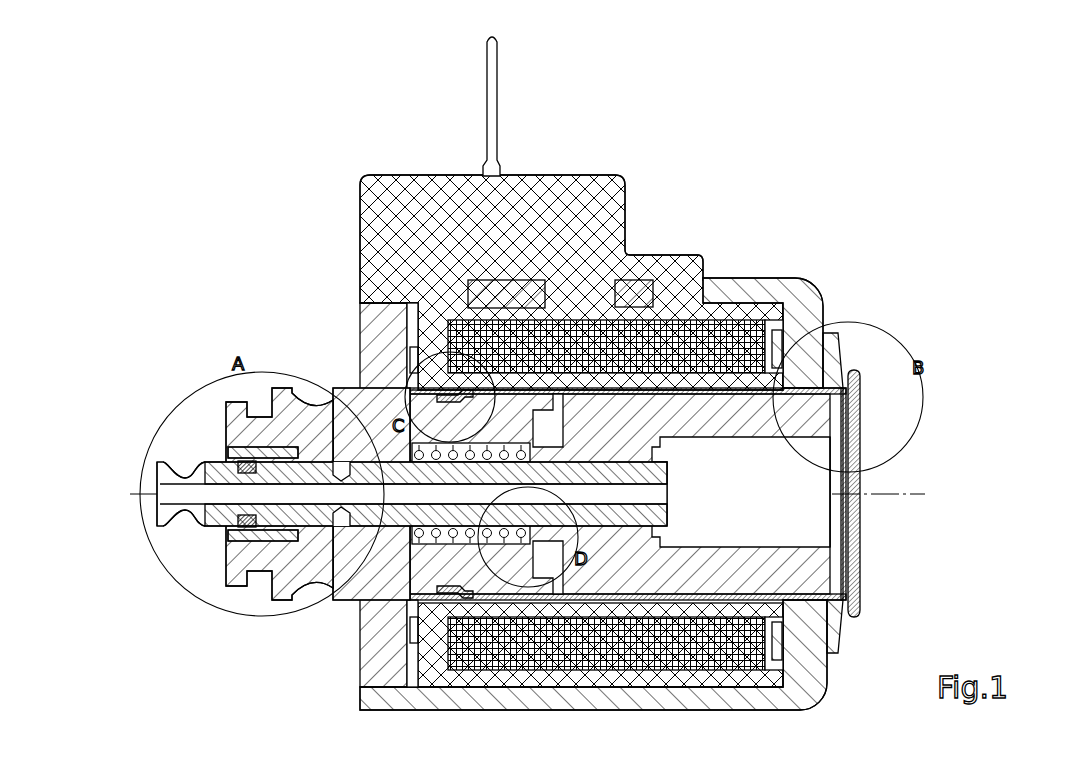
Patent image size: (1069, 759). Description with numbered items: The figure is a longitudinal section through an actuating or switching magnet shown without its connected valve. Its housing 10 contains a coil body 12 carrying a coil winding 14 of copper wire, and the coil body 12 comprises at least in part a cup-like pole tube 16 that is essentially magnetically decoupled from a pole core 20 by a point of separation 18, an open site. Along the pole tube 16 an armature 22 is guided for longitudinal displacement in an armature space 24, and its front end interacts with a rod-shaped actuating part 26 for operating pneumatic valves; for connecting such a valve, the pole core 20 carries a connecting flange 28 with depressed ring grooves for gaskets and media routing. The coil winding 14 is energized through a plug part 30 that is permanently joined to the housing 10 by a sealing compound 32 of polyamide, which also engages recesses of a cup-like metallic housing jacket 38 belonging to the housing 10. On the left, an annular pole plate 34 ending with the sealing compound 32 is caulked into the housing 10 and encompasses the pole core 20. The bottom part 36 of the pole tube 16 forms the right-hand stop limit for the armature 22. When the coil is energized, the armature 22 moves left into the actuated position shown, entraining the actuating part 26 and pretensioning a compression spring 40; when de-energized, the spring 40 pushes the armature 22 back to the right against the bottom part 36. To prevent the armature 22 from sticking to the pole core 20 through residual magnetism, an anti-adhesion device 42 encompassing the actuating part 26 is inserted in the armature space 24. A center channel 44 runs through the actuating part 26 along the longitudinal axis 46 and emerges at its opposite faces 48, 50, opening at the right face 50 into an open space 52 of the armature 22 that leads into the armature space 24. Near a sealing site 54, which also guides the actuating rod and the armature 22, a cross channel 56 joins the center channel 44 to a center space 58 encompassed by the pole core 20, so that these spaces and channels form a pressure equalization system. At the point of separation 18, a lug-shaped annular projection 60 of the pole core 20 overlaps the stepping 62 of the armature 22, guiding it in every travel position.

The housing 10 is at (733, 278).
The coil body 12 is at (783, 355).
The coil winding 14 is at (752, 302).
The pole tube 16 is at (838, 358).
The point of separation 18 is at (578, 385).
The pole core 20 is at (348, 385).
The armature 22 is at (813, 547).
The armature space 24 is at (837, 502).
The rod-shaped actuating part 26 is at (208, 470).
The connecting flange 28 is at (290, 385).
The plug part 30 is at (496, 92).
The sealing compound 32 is at (601, 174).
The pole plate 34 is at (358, 380).
The bottom part 36 is at (865, 565).
The housing jacket 38 is at (805, 670).
The compression spring 40 is at (347, 605).
The anti-adhesion device 42 is at (538, 552).
The center channel 44 is at (160, 476).
The longitudinal axis 46 is at (185, 463).
The left face of the actuating part 48 is at (152, 488).
The right face of the actuating part 50 is at (662, 470).
The open space 52 is at (731, 526).
The sealing site 54 is at (228, 555).
The cross channel 56 is at (343, 466).
The center space 58 is at (275, 590).
The annular projection 60 is at (548, 390).
The stepping 62 is at (668, 278).